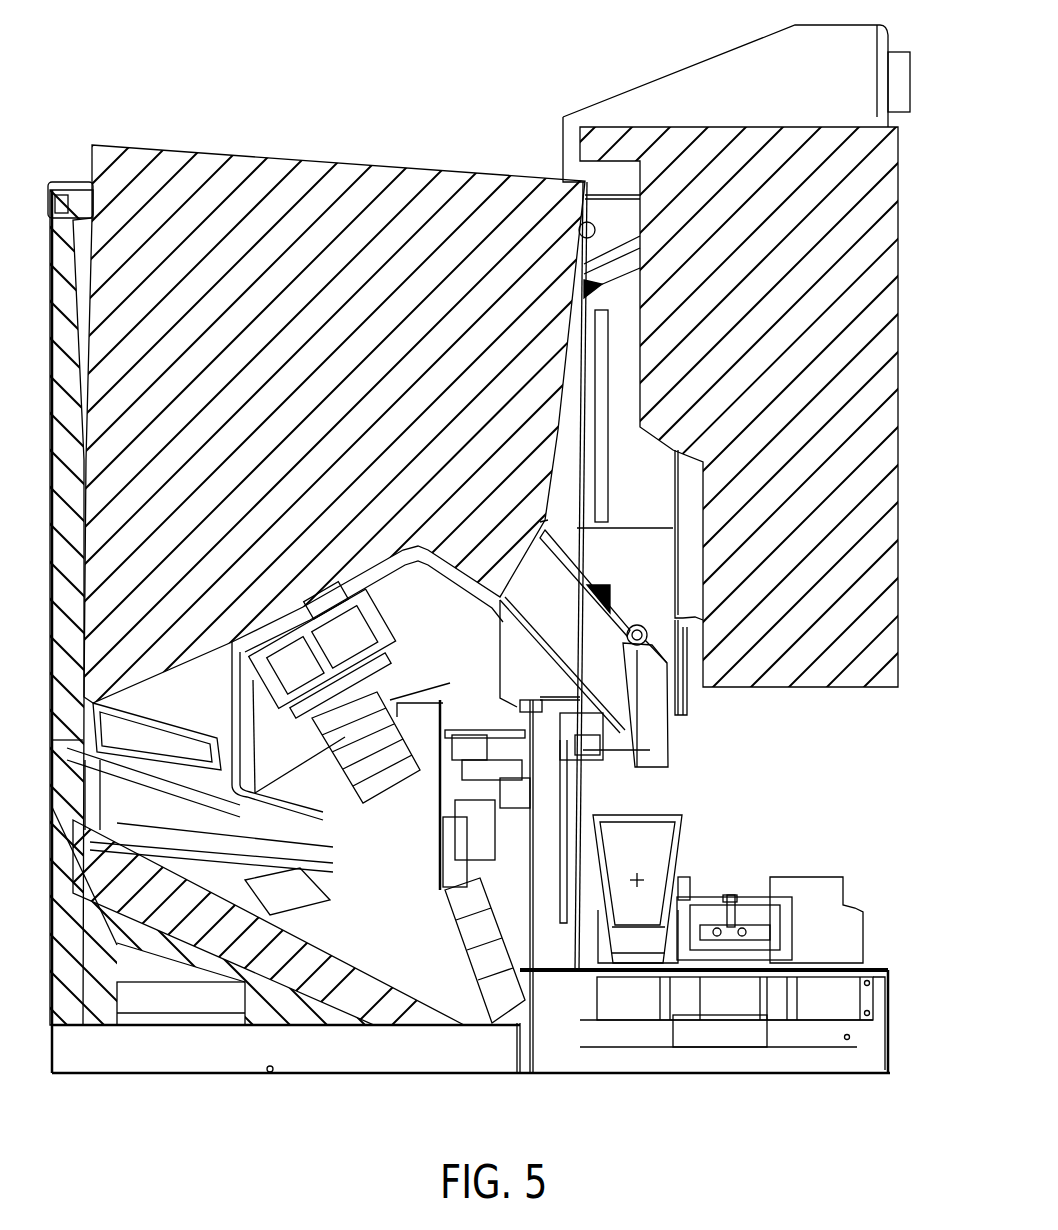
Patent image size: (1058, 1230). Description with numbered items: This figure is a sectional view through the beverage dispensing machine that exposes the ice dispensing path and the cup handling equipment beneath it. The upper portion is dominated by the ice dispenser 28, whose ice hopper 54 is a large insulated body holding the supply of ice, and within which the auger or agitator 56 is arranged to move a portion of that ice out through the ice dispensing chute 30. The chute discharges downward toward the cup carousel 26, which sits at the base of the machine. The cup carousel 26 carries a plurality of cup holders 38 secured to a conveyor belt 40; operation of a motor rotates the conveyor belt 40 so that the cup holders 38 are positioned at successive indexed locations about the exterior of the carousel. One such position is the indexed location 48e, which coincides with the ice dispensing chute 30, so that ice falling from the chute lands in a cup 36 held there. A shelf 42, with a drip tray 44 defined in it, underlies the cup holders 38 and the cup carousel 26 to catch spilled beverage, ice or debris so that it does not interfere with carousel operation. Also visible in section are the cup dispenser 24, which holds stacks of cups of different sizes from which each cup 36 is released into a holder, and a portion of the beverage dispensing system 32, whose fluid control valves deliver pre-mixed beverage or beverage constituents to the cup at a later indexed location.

The cup dispenser 24 is at (914, 465).
The cup carousel 26 is at (775, 808).
The ice dispenser 28 is at (474, 512).
The ice dispensing chute 30 is at (663, 768).
The beverage dispensing system 32 is at (482, 716).
The cup 36 is at (684, 826).
The cup holders 38 is at (687, 888).
The conveyor belt 40 is at (757, 907).
The shelf 42 is at (863, 957).
The drip tray 44 is at (840, 972).
The indexed location 48e is at (648, 875).
The ice hopper 54 is at (270, 518).
The auger or agitator 56 is at (380, 645).